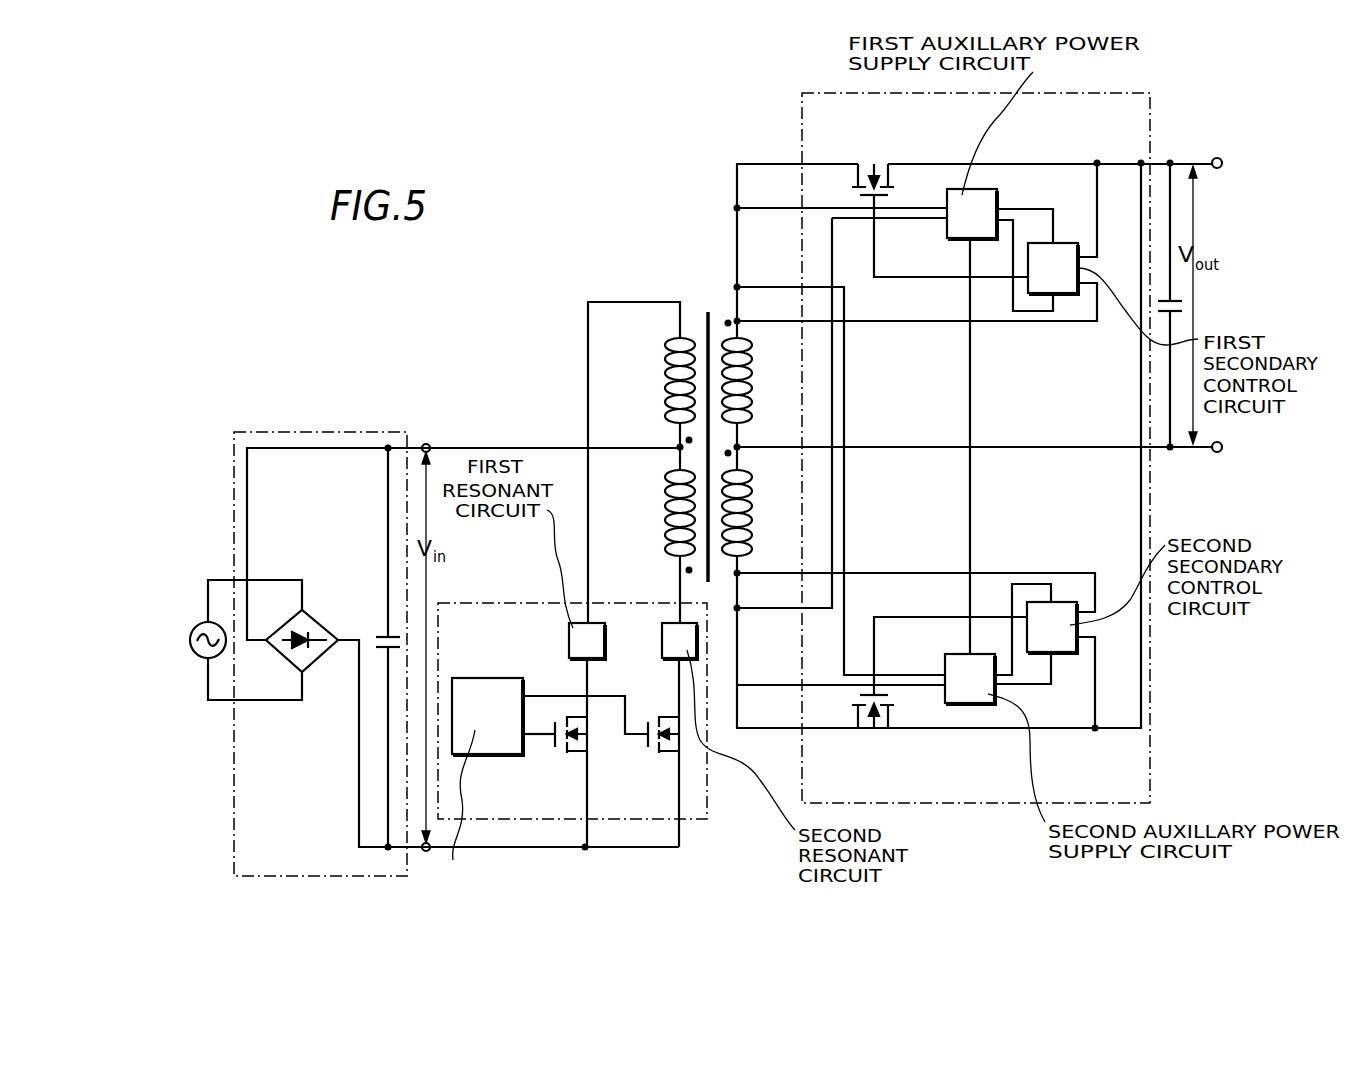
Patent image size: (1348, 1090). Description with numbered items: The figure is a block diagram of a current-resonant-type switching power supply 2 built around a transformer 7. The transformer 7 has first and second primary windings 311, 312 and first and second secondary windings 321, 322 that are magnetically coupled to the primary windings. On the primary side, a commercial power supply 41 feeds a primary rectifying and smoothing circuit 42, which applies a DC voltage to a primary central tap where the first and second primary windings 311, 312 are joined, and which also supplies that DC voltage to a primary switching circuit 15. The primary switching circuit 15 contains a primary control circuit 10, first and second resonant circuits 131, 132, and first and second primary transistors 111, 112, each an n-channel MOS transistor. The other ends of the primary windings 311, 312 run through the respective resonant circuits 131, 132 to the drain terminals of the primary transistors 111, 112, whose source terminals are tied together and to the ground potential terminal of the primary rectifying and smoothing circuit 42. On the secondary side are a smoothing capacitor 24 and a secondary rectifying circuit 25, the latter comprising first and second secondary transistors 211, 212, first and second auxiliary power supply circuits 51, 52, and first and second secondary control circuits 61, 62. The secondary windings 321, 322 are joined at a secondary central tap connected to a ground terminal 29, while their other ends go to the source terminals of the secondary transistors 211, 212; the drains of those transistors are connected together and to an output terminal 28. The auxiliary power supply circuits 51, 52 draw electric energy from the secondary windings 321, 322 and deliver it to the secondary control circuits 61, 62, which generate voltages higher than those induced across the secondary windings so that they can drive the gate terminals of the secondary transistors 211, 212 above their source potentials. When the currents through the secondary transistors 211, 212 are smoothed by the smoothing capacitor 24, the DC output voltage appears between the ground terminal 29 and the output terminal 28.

The switching power supply 2 is at (314, 324).
The transformer 7 is at (708, 284).
The primary control circuit 10 is at (505, 678).
The first primary transistor 111 is at (555, 748).
The second primary transistor 112 is at (648, 748).
The first resonant circuit 131 is at (573, 628).
The second resonant circuit 132 is at (662, 628).
The primary switching circuit 15 is at (707, 803).
The first secondary transistor 211 is at (880, 162).
The second secondary transistor 212 is at (877, 732).
The smoothing capacitor 24 is at (1183, 303).
The secondary rectifying circuit 25 is at (801, 130).
The output terminal 28 is at (1212, 156).
The ground terminal 29 is at (1217, 452).
The first primary winding 311 is at (667, 378).
The second primary winding 312 is at (667, 516).
The first secondary winding 321 is at (752, 378).
The second secondary winding 322 is at (752, 510).
The commercial power supply 41 is at (203, 622).
The primary rectifying and smoothing circuit 42 is at (336, 432).
The first auxiliary power supply circuit 51 is at (985, 195).
The second auxiliary power supply circuit 52 is at (975, 706).
The first secondary control circuit 61 is at (1068, 296).
The second secondary control circuit 62 is at (1060, 600).